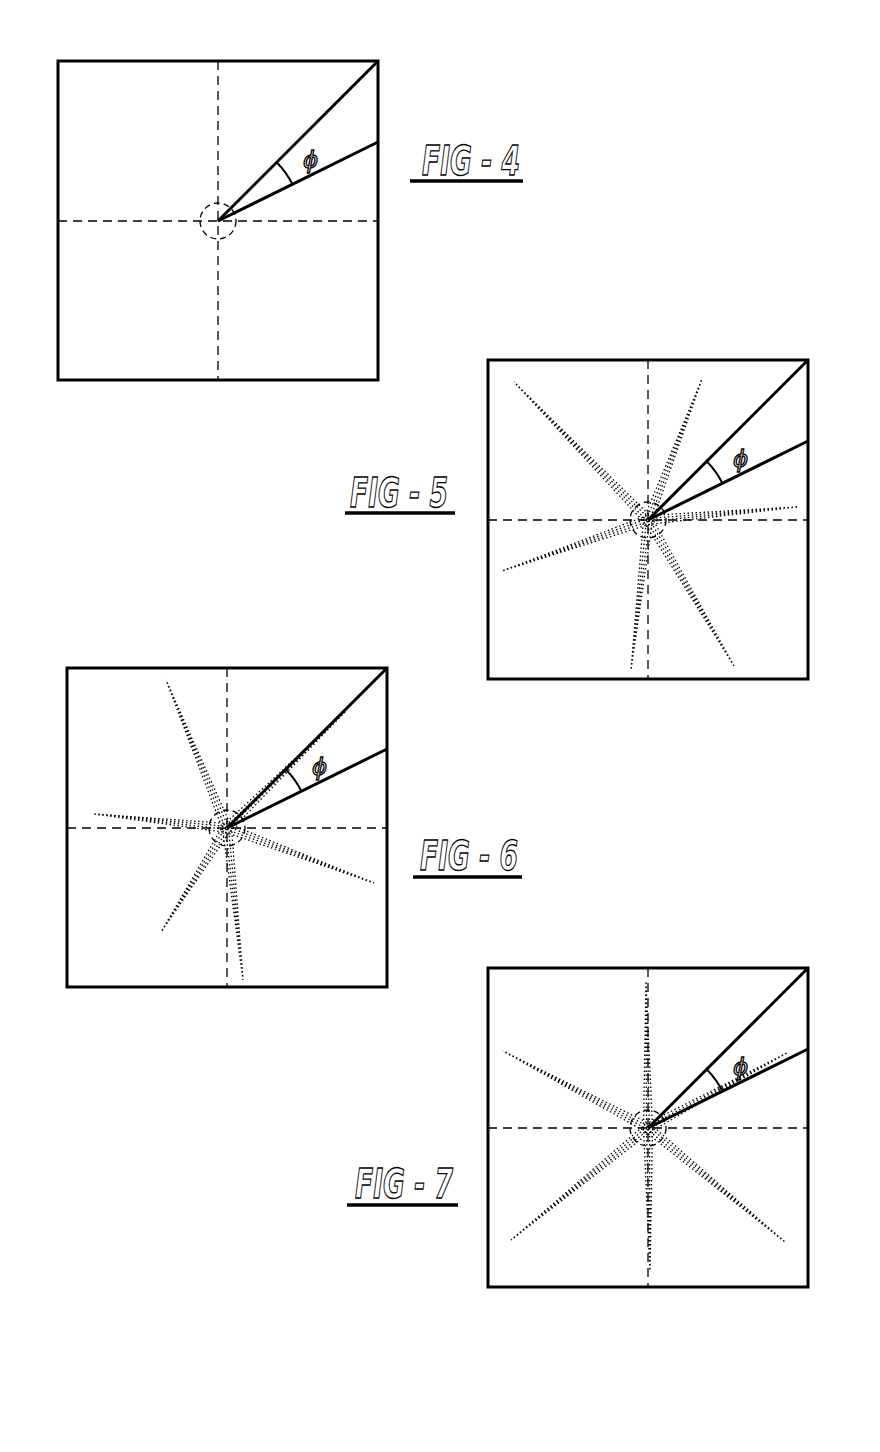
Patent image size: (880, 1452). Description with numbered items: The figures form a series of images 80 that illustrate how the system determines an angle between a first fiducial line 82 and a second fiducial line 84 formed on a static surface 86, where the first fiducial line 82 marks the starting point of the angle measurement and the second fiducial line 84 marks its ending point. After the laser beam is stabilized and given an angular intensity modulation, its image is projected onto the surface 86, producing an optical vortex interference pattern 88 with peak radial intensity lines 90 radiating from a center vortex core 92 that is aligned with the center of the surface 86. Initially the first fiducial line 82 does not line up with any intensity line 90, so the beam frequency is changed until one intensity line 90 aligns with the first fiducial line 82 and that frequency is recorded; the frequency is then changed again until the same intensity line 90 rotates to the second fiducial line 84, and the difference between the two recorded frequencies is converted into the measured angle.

In FIG. 4, the images 80 is at (114, 51).
In FIG. 5, the images 80 is at (643, 311).
In FIG. 6, the images 80 is at (223, 615).
In FIG. 7, the images 80 is at (643, 918).
In FIG. 4, the first fiducial line 82 is at (331, 108).
In FIG. 5, the first fiducial line 82 is at (765, 403).
In FIG. 6, the first fiducial line 82 is at (345, 710).
In FIG. 7, the first fiducial line 82 is at (765, 1012).
In FIG. 4, the second fiducial line 84 is at (328, 167).
In FIG. 5, the second fiducial line 84 is at (790, 450).
In FIG. 6, the second fiducial line 84 is at (370, 758).
In FIG. 7, the second fiducial line 84 is at (793, 1057).
In FIG. 4, the static surface 86 is at (360, 312).
In FIG. 5, the static surface 86 is at (588, 385).
In FIG. 6, the static surface 86 is at (133, 690).
In FIG. 7, the static surface 86 is at (648, 1127).
In FIG. 5, the optical vortex interference pattern 88 is at (754, 577).
In FIG. 6, the optical vortex interference pattern 88 is at (334, 929).
In FIG. 7, the optical vortex interference pattern 88 is at (753, 1182).
In FIG. 5, the peak radial intensity lines 90 is at (704, 616).
In FIG. 6, the peak radial intensity lines 90 is at (160, 937).
In FIG. 7, the peak radial intensity lines 90 is at (718, 1186).
In FIG. 4, the center vortex core 92 is at (218, 221).
In FIG. 5, the center vortex core 92 is at (645, 522).
In FIG. 6, the center vortex core 92 is at (225, 826).
In FIG. 7, the center vortex core 92 is at (645, 1130).